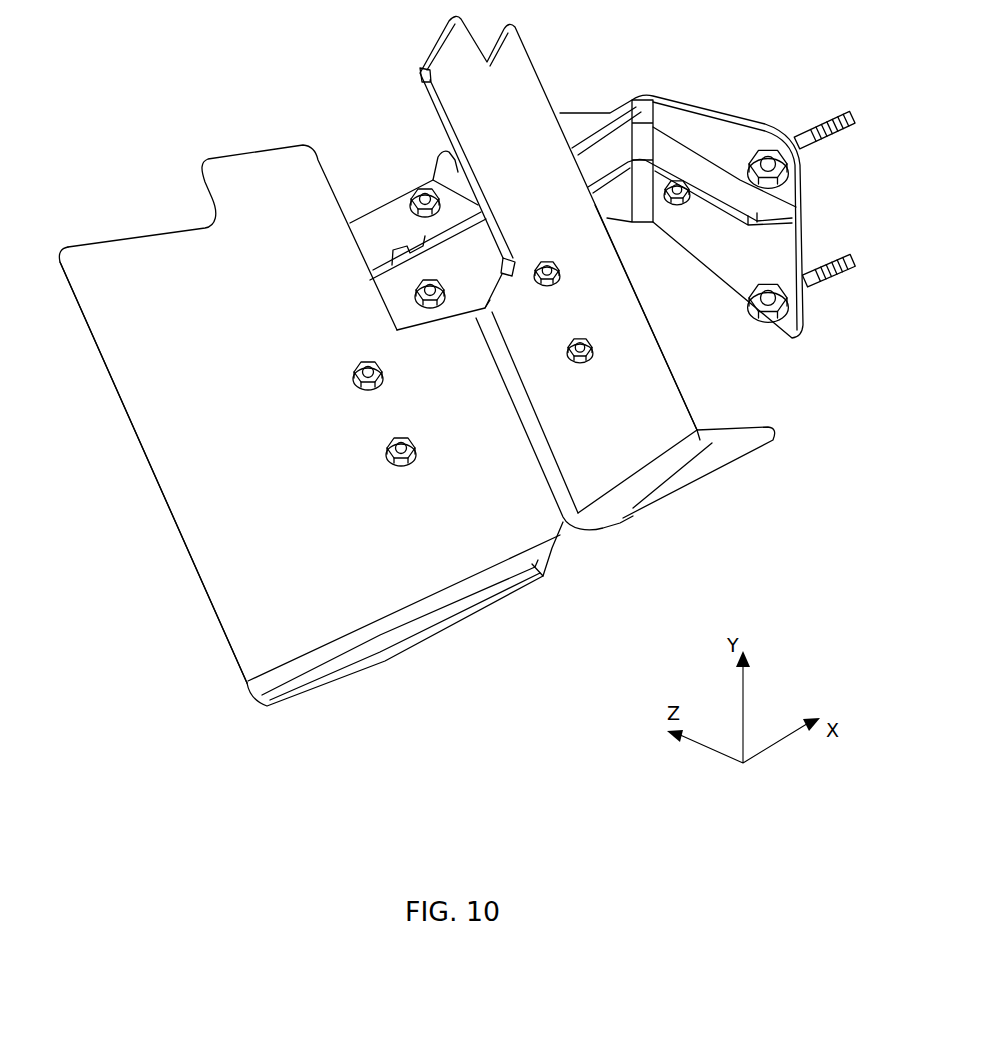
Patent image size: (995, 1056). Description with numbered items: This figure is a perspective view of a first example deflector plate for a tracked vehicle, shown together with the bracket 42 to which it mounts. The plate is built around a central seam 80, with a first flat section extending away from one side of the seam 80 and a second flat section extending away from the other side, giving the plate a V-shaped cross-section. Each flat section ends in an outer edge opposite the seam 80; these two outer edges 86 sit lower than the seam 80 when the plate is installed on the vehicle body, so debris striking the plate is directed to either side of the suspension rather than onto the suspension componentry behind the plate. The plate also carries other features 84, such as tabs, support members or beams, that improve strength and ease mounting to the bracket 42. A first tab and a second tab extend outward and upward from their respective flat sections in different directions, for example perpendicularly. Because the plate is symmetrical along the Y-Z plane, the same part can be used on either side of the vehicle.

The bracket 42 is at (707, 216).
The seam 80 is at (504, 371).
The other features 84 is at (441, 163).
The outer edges 86 is at (85, 634).